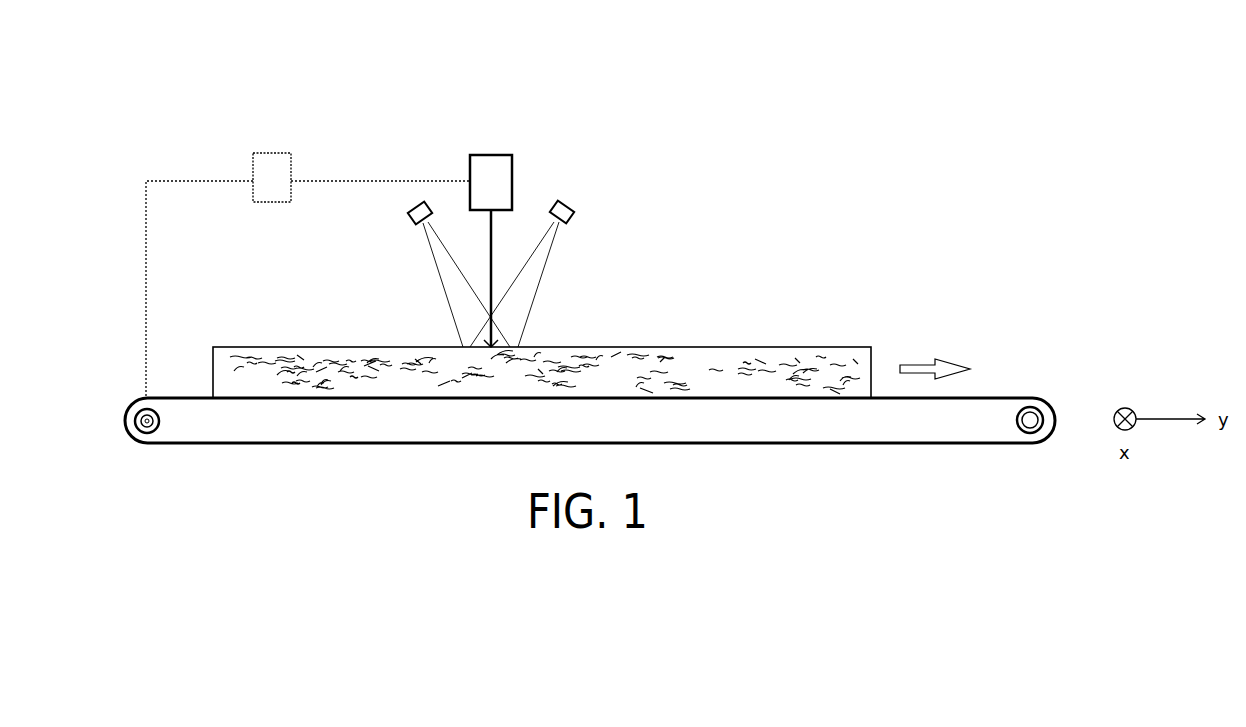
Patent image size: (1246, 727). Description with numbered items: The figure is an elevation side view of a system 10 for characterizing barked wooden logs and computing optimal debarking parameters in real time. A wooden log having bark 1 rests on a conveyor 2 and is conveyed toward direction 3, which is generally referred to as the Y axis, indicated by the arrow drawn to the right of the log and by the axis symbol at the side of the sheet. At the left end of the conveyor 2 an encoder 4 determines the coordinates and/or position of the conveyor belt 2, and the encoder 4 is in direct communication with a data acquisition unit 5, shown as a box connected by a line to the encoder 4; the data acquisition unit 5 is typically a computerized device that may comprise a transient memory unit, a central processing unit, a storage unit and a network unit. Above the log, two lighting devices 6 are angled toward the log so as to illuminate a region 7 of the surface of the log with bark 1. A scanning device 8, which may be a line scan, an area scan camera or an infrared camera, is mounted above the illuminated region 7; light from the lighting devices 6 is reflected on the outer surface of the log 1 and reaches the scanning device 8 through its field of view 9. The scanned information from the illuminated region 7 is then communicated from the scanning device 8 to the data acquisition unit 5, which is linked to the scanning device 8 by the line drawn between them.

The wooden log having bark 1 is at (822, 347).
The conveyor 2 is at (1010, 397).
The direction 3 is at (930, 362).
The encoder 4 is at (131, 400).
The data acquisition unit 5 is at (272, 177).
The lighting device 6 is at (410, 218).
The illuminated region 7 is at (480, 318).
The scanning device 8 is at (491, 251).
The field of view 9 is at (493, 233).
The system for characterizing wooden logs having bark 10 is at (355, 141).